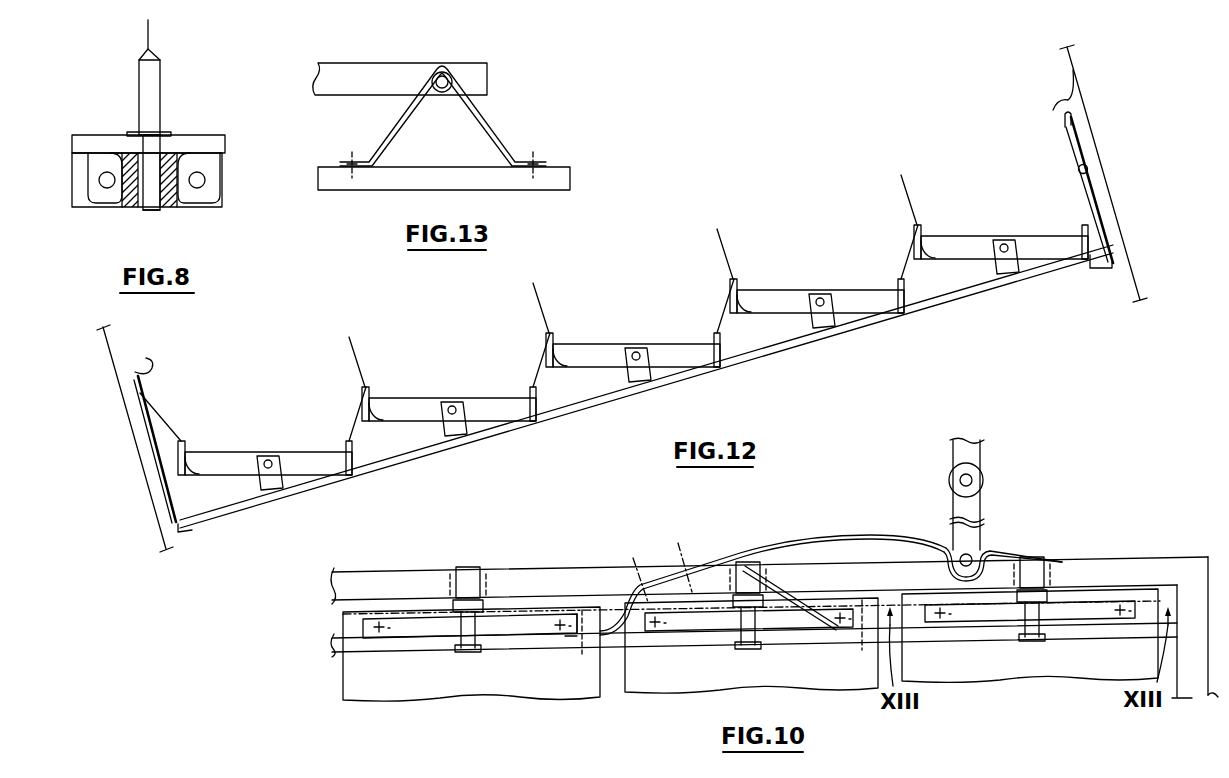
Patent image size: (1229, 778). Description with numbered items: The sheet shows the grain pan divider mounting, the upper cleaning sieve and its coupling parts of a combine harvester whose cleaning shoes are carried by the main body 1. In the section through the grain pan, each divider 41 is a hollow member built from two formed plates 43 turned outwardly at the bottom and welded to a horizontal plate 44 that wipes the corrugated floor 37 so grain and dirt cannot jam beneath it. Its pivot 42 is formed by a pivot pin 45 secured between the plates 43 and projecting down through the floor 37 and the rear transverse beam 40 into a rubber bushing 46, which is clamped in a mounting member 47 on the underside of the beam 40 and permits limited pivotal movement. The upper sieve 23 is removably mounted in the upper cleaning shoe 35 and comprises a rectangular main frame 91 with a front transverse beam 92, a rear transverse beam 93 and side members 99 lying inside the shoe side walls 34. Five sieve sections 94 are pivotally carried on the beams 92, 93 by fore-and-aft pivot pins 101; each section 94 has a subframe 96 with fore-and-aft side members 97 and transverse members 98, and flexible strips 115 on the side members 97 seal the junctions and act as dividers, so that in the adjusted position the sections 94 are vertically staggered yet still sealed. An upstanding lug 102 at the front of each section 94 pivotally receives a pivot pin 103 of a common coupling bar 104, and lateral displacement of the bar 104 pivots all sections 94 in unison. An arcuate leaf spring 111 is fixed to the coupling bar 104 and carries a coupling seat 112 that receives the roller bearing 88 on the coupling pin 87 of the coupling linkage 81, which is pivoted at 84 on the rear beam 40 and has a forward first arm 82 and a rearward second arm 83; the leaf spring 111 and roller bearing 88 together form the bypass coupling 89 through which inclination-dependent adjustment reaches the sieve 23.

In FIG. 12, the main body 1 is at (157, 518).
In FIG. 12, the upper cleaning sieve 23 is at (670, 322).
In FIG. 10, the upper cleaning sieve 23 is at (555, 565).
In FIG. 12, the upper cleaning shoe side wall 34 is at (145, 368).
In FIG. 12, the upper cleaning shoe 35 is at (1137, 296).
In FIG. 8, the corrugated floor 37 is at (207, 134).
In FIG. 8, the rear transverse beam 40 is at (213, 208).
In FIG. 8, the divider 41 is at (162, 70).
In FIG. 8, the pivot 42 is at (170, 218).
In FIG. 8, the formed plate 43 is at (163, 100).
In FIG. 8, the horizontal plate 44 is at (120, 136).
In FIG. 8, the pivot pin 45 is at (155, 212).
In FIG. 8, the rubber bushing 46 is at (138, 210).
In FIG. 8, the mounting member 47 is at (218, 193).
In FIG. 10, the coupling linkage 81 is at (952, 455).
In FIG. 10, the first arm 82 is at (950, 447).
In FIG. 10, the second arm 83 is at (952, 511).
In FIG. 10, the pivot 84 is at (983, 476).
In FIG. 10, the coupling pin 87 is at (985, 549).
In FIG. 10, the roller bearing 88 is at (984, 540).
In FIG. 10, the bypass coupling 89 is at (1023, 517).
In FIG. 12, the main frame 91 is at (158, 465).
In FIG. 10, the main frame 91 is at (1165, 557).
In FIG. 10, the front transverse beam 92 is at (390, 572).
In FIG. 12, the rear transverse beam 93 is at (763, 358).
In FIG. 12, the sieve section 94 is at (226, 451).
In FIG. 10, the sieve section 94 is at (345, 705).
In FIG. 12, the subframe 96 is at (240, 477).
In FIG. 12, the fore-and-aft side member 97 is at (183, 476).
In FIG. 13, the transverse subframe member 98 is at (538, 190).
In FIG. 12, the transverse subframe member 98 is at (300, 484).
In FIG. 10, the transverse subframe member 98 is at (743, 575).
In FIG. 12, the main frame side member 99 is at (148, 417).
In FIG. 12, the pivot pin 101 is at (272, 460).
In FIG. 10, the pivot pin 101 is at (470, 567).
In FIG. 13, the upstanding lug 102 is at (501, 141).
In FIG. 10, the upstanding lug 102 is at (407, 638).
In FIG. 13, the pivot pin 103 is at (440, 93).
In FIG. 10, the pivot pin 103 is at (476, 631).
In FIG. 13, the coupling bar 104 is at (358, 63).
In FIG. 10, the coupling bar 104 is at (557, 647).
In FIG. 10, the leaf spring 111 is at (823, 537).
In FIG. 10, the coupling seat 112 is at (966, 578).
In FIG. 12, the flexible strip 115 is at (182, 440).